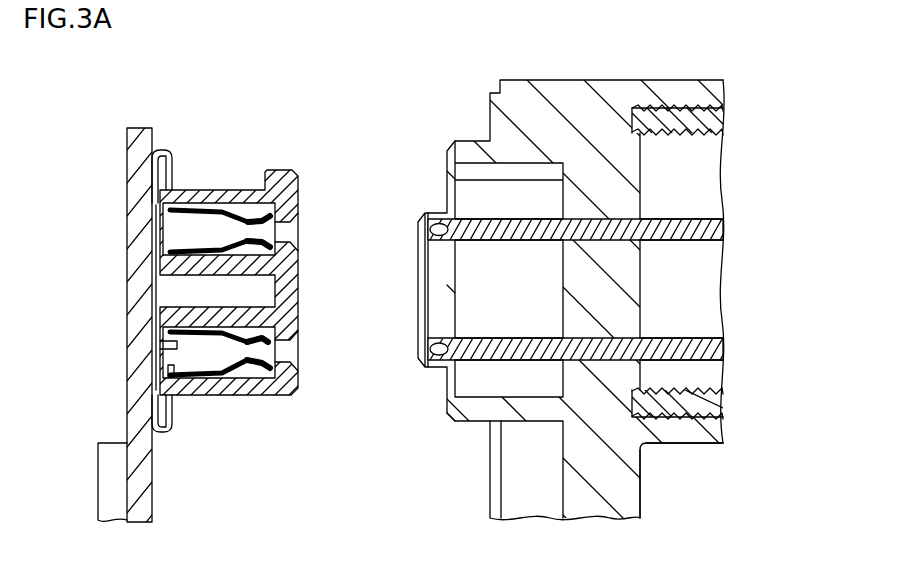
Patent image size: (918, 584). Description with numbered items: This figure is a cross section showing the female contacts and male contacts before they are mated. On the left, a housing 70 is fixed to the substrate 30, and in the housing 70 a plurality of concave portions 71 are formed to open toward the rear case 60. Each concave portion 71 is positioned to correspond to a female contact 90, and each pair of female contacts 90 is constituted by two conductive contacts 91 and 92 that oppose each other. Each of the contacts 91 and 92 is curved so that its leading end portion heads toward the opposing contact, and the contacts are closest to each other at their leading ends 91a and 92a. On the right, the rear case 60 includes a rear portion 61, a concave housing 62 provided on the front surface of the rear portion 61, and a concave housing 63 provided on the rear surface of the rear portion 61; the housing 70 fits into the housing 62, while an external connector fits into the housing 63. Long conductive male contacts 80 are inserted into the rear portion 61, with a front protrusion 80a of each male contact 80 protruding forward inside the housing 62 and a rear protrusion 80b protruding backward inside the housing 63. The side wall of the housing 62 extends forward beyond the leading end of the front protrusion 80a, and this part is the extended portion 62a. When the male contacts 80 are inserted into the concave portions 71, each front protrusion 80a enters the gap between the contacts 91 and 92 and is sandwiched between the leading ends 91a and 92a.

The substrate 30 is at (140, 508).
The rear case 60 is at (613, 69).
The rear portion 61 is at (598, 497).
The concave housing (second housing) 62 is at (457, 439).
The extended portion 62a is at (447, 396).
The concave housing 63 is at (724, 458).
The housing (first housing) 70 is at (278, 170).
The concave portion 71 is at (299, 232).
The male contact (second contact) 80 is at (700, 210).
The front protrusion 80a is at (497, 232).
The rear protrusion 80b is at (688, 239).
The female contact 90 is at (192, 207).
The contact 91 is at (180, 214).
The leading end 91a is at (242, 214).
The contact 92 is at (180, 249).
The leading end 92a is at (250, 327).